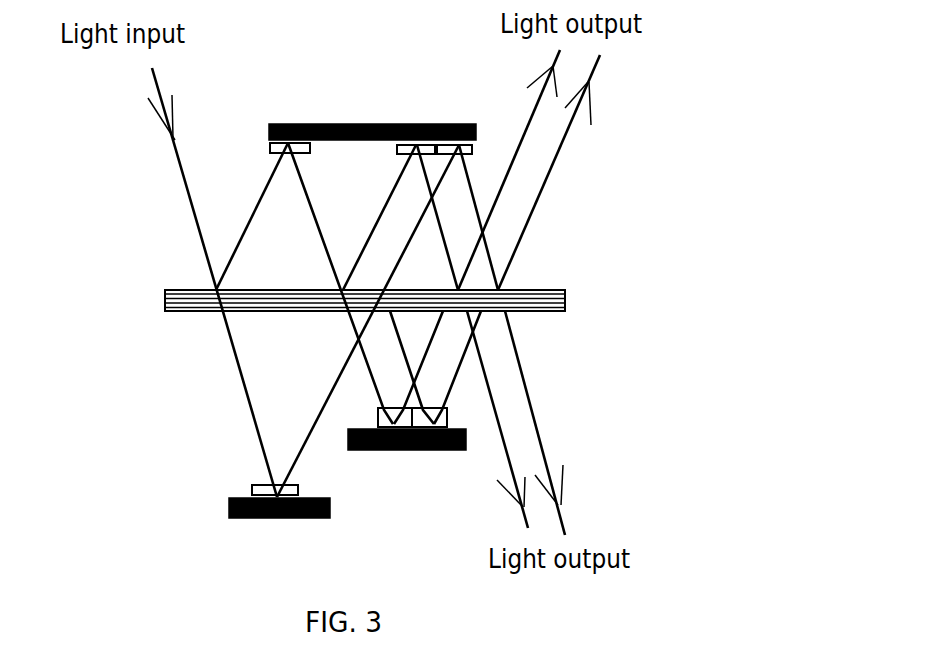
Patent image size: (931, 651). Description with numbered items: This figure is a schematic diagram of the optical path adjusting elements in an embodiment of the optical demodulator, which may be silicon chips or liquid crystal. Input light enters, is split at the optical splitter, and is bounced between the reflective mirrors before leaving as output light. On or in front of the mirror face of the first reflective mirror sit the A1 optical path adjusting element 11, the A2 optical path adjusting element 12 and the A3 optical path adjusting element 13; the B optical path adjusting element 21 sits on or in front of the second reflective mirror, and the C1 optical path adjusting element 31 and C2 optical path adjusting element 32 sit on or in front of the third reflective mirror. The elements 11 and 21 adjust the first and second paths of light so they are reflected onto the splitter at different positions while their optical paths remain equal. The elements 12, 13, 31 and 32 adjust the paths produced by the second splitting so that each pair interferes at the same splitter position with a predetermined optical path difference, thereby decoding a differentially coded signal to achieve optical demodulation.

The A1 optical path adjusting element 11 is at (172, 172).
The A2 optical path adjusting element 12 is at (438, 156).
The A3 optical path adjusting element 13 is at (538, 170).
The B optical path adjusting element 21 is at (252, 489).
The C1 optical path adjusting element 31 is at (258, 388).
The C2 optical path adjusting element 32 is at (447, 418).